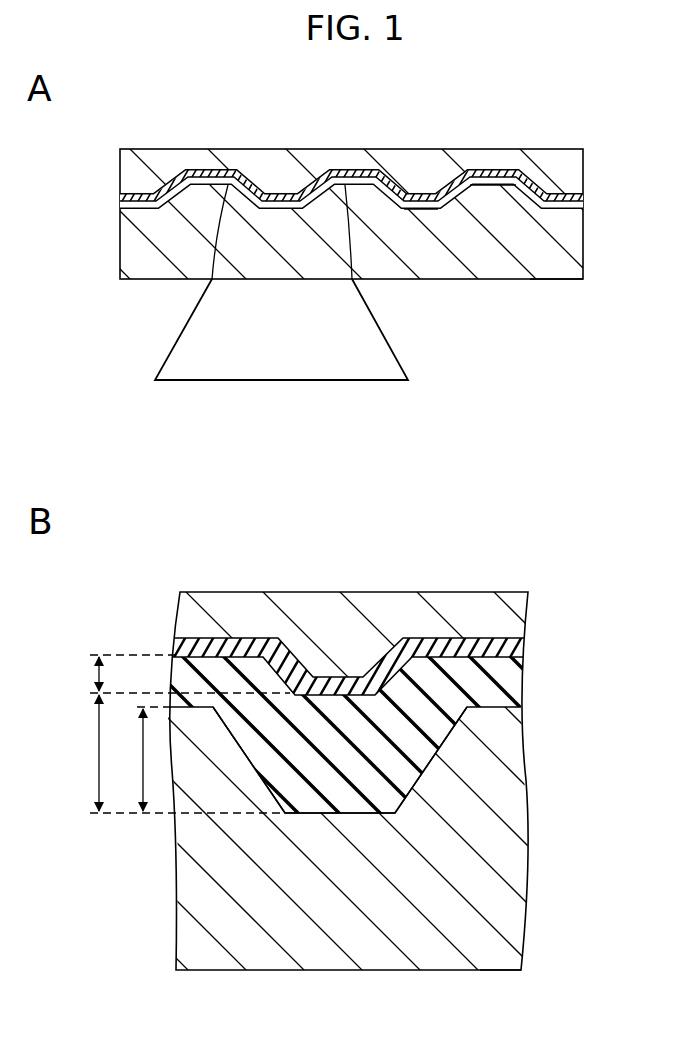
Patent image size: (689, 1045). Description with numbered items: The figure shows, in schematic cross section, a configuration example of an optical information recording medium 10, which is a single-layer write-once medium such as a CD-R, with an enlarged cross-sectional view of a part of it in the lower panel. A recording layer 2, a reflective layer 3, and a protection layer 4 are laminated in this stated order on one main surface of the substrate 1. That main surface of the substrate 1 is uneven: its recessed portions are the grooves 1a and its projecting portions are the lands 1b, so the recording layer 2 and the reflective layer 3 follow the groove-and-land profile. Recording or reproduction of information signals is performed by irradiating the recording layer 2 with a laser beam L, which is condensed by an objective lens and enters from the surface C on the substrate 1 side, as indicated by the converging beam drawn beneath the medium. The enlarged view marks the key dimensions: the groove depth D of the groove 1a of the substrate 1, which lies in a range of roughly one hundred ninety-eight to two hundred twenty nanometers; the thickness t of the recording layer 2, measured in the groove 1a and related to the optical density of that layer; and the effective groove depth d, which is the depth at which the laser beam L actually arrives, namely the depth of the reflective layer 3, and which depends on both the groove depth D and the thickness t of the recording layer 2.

The optical information recording medium 10 is at (149, 121).
The protection layer 4 is at (573, 160).
The reflective layer 3 is at (576, 198).
The recording layer 2 is at (580, 204).
The substrate 1 is at (574, 247).
The groove 1a is at (432, 210).
The land 1b is at (502, 188).
The surface C is at (549, 284).
The laser beam L is at (390, 362).
The effective groove depth d is at (182, 674).
The thickness of the recording layer t is at (181, 754).
The groove depth D is at (144, 759).